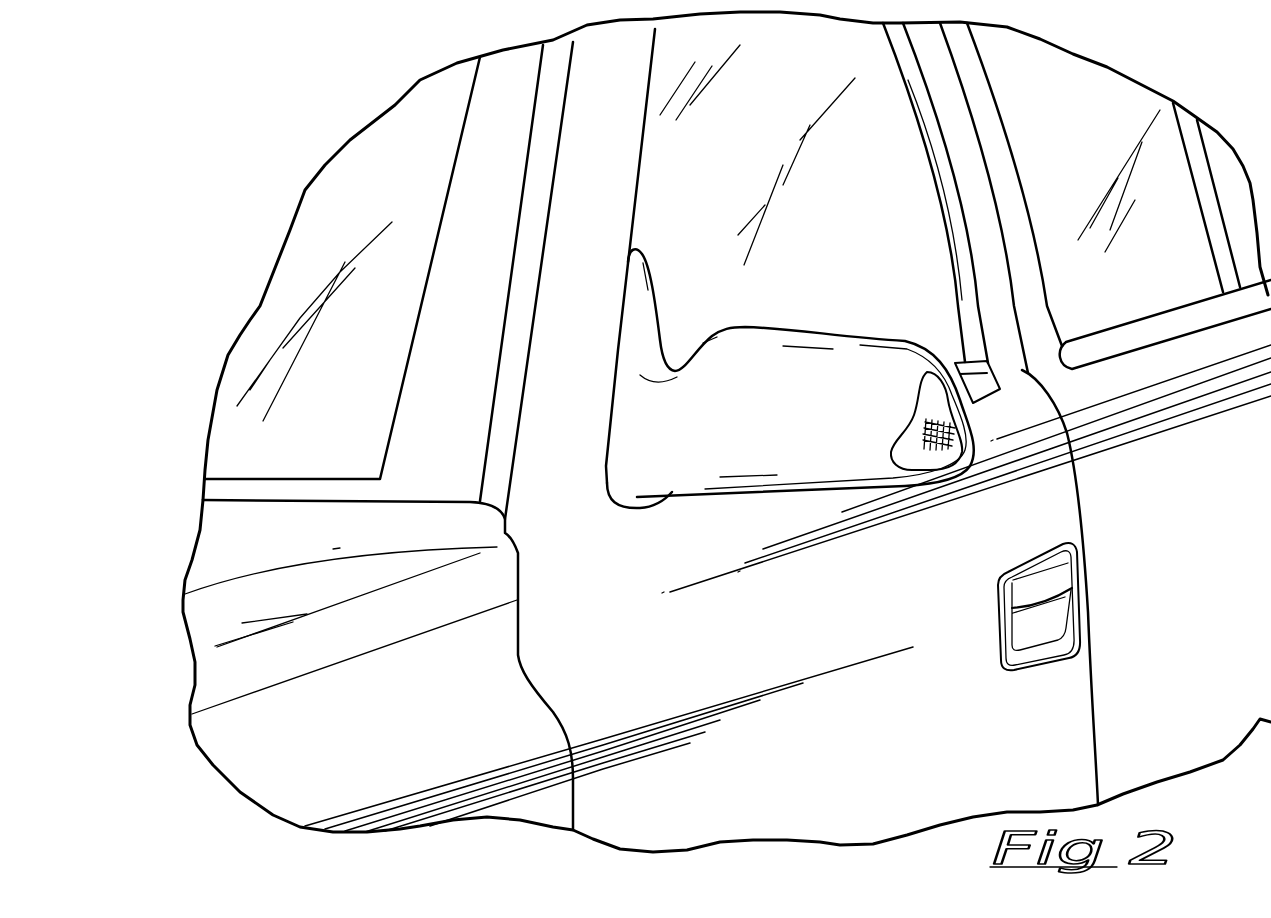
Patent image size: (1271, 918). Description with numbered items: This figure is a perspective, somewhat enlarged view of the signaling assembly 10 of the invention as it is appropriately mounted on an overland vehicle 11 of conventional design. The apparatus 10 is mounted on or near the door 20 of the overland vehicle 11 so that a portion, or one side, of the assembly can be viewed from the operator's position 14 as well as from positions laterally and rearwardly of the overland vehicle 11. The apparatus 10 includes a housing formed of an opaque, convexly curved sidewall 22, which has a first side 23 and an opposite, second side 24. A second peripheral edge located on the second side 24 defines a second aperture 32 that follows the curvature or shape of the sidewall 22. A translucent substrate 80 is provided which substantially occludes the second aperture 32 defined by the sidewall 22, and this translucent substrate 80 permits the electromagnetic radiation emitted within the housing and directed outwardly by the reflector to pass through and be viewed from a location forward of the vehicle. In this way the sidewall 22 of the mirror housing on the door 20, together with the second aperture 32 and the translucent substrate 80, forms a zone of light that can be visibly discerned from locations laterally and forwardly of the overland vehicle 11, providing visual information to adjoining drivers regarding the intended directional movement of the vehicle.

The signaling assembly 10 is at (793, 410).
The overland vehicle 11 is at (973, 752).
The operator's position 14 is at (363, 334).
The door 20 is at (851, 644).
The convexly curved sidewall 22 is at (806, 424).
The first side 23 is at (968, 368).
The second side 24 is at (640, 446).
The second aperture 32 is at (925, 388).
The translucent substrate 80 is at (928, 450).